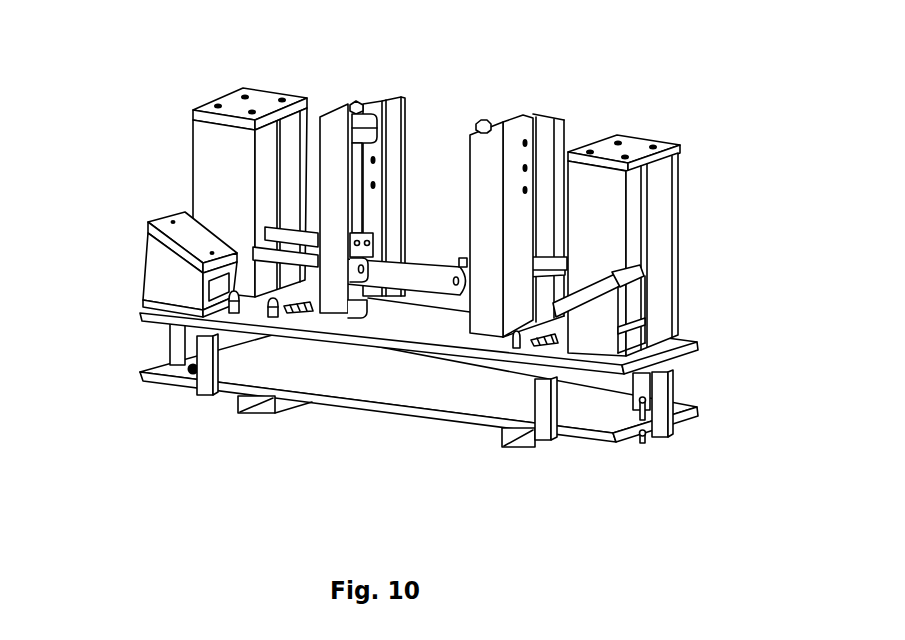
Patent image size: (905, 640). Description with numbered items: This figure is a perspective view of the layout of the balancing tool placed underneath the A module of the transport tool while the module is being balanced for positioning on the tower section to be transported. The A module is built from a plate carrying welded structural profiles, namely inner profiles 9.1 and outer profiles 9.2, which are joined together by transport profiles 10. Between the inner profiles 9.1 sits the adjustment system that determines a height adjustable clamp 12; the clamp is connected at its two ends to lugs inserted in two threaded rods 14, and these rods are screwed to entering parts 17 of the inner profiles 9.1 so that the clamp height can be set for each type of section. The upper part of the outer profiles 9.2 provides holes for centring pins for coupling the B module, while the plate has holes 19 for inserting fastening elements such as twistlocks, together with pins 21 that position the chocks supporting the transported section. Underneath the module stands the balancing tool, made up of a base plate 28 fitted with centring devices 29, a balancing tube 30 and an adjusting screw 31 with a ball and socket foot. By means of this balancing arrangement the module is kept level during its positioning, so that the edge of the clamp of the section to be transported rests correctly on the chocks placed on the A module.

The outer structural profile 9.2 is at (232, 145).
The inner structural profile 9.1 is at (520, 217).
The transport profile 10 is at (283, 247).
The clamp 12 is at (400, 277).
The threaded rod 14 is at (353, 175).
The entering part 17 is at (363, 103).
The hole 19 is at (543, 343).
The pin 21 is at (278, 306).
The base plate 28 is at (387, 385).
The centring device 29 is at (640, 378).
The balancing tube 30 is at (227, 355).
The adjusting screw 31 is at (190, 232).